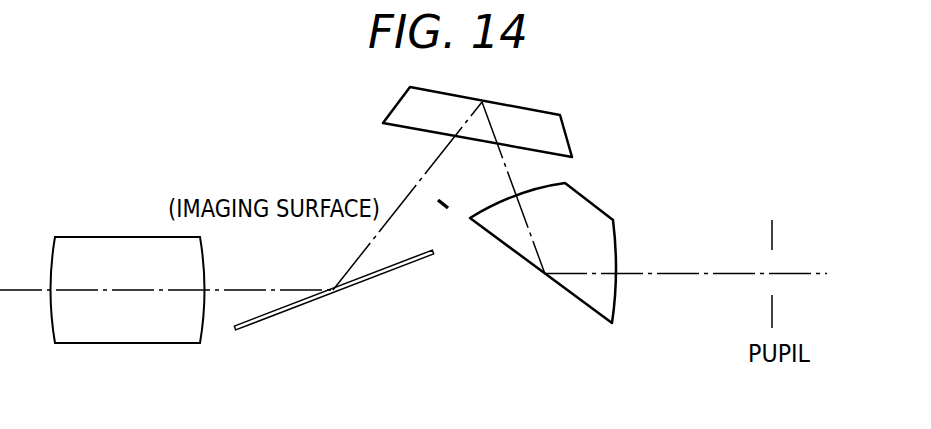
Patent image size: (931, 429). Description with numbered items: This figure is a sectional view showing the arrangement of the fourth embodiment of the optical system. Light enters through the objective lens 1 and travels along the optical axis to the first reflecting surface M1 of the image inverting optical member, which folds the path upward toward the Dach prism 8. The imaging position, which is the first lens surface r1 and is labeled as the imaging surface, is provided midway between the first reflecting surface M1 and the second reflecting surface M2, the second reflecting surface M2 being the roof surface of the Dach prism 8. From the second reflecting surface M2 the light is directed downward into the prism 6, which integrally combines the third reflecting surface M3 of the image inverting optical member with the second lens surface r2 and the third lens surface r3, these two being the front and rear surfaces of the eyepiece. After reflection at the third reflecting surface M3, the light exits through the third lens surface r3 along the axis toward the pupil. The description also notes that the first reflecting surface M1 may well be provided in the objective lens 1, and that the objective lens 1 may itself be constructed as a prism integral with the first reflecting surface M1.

The objective lens 1 is at (173, 321).
The Dach prism 8 is at (460, 105).
The prism 6 is at (577, 283).
The first reflecting surface M1 is at (351, 278).
The second reflecting surface M2 is at (567, 127).
The third reflecting surface M3 is at (588, 310).
The first lens surface r1 is at (393, 165).
The second lens surface r2 is at (557, 183).
The third lens surface r3 is at (617, 237).